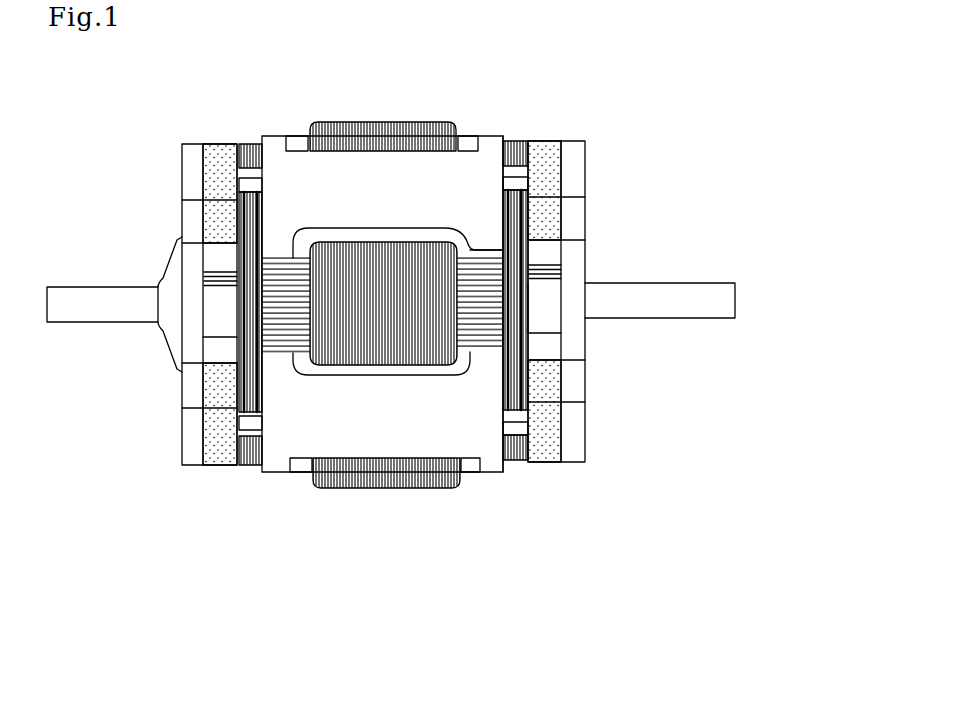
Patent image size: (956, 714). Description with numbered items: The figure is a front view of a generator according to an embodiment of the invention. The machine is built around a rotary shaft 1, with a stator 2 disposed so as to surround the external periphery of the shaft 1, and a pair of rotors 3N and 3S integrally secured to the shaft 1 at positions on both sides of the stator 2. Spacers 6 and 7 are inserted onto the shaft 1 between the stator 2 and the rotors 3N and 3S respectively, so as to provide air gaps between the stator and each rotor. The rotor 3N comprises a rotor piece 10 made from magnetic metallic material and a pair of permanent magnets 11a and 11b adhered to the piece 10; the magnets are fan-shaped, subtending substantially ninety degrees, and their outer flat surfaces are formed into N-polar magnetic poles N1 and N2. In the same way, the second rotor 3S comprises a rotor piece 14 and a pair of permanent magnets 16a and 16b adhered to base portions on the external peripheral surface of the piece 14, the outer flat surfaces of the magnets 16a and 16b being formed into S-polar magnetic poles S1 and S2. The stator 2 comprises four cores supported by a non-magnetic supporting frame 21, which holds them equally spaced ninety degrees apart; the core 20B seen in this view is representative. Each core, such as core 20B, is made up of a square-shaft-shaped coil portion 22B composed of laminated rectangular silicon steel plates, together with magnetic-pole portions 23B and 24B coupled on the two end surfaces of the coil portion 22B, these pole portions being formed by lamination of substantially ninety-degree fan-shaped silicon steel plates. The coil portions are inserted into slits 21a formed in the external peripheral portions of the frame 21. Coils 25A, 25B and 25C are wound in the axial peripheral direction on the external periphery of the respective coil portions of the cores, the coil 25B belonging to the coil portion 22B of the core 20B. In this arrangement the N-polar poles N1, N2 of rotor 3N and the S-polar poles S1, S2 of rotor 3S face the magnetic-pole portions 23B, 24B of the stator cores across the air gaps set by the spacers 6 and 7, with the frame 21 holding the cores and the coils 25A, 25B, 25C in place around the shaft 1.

The rotary shaft 1 is at (70, 287).
The stator 2 is at (470, 127).
The rotor 3N is at (177, 205).
The rotor 3S is at (590, 208).
The spacer 6 is at (219, 325).
The spacer 7 is at (547, 327).
The rotor piece 10 is at (180, 145).
The permanent magnet 11a is at (222, 143).
The permanent magnet 11b is at (225, 465).
The rotor piece 14 is at (578, 158).
The permanent magnet 16a is at (552, 147).
The permanent magnet 16b is at (558, 463).
The core 20B is at (598, 590).
The supporting frame 21 is at (343, 180).
The slit 21a is at (505, 250).
The coil portion 22B is at (475, 352).
The magnetic-pole portion 23B is at (243, 353).
The magnetic-pole portion 24B is at (502, 410).
The coil 25A is at (403, 122).
The coil 25B is at (340, 345).
The coil 25C is at (400, 488).
The N-polar magnetic pole N1 is at (262, 150).
The N-polar magnetic pole N2 is at (266, 447).
The S-polar magnetic pole S1 is at (518, 140).
The S-polar magnetic pole S2 is at (514, 462).